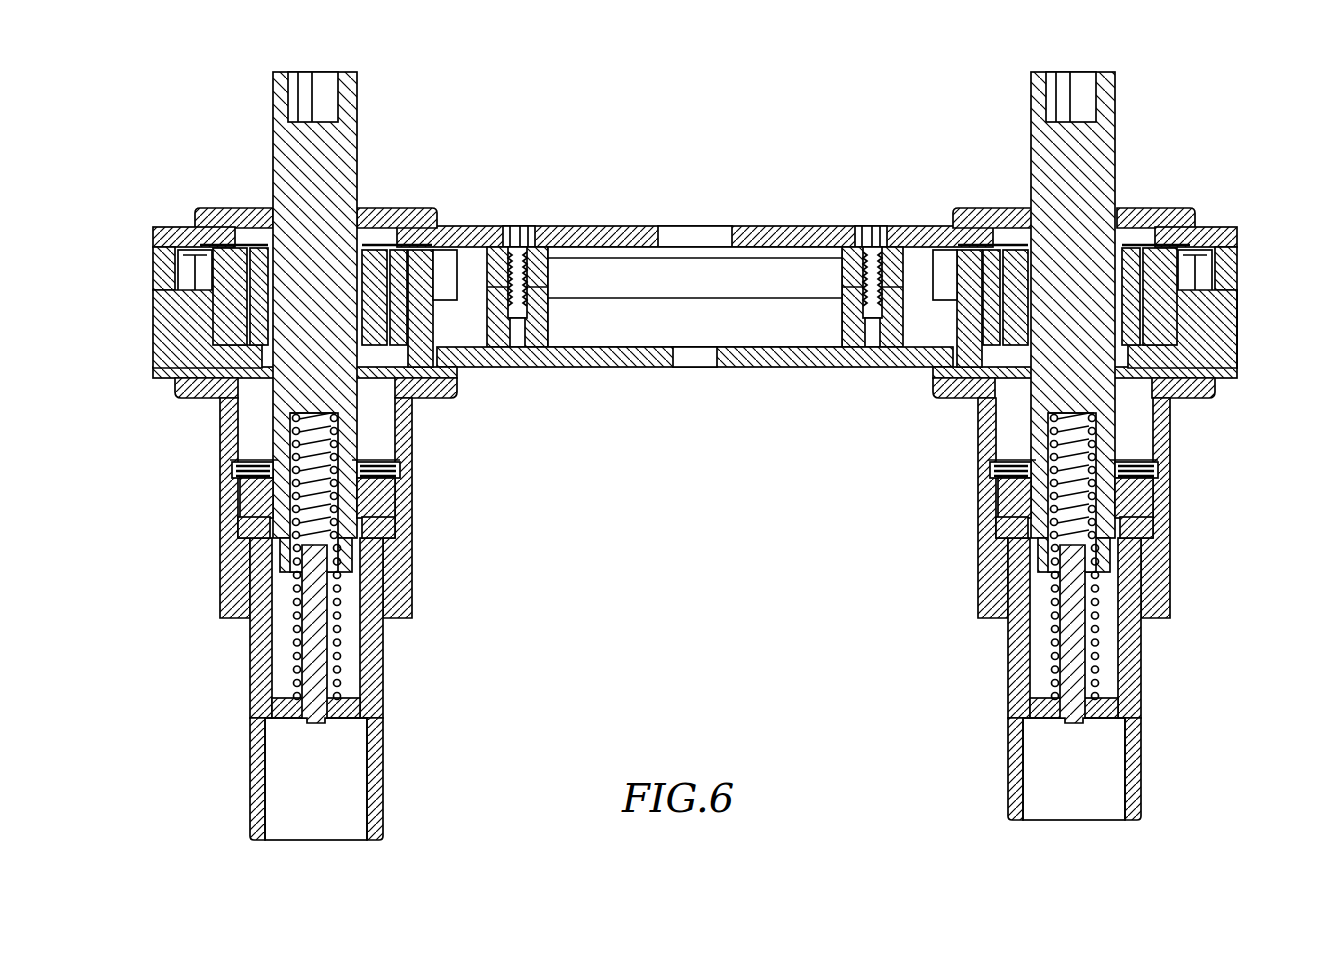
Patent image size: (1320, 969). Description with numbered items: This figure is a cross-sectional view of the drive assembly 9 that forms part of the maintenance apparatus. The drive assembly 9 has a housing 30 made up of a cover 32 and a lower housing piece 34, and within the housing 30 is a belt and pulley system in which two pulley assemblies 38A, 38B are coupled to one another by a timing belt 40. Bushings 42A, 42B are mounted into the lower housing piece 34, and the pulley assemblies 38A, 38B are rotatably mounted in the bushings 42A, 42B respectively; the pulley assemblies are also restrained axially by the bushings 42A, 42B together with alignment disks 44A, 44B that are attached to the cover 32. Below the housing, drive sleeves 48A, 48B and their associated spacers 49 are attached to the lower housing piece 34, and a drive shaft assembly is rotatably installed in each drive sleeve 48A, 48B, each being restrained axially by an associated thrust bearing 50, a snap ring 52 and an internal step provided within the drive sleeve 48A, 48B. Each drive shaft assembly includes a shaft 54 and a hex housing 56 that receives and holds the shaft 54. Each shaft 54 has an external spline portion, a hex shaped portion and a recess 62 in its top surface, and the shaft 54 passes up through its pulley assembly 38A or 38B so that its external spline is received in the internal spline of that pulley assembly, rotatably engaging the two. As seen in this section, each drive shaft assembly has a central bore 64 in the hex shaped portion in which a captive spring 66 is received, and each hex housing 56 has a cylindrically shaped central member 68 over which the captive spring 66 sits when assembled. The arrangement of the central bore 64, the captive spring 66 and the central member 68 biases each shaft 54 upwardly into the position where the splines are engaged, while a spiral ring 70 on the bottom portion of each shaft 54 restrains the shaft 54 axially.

The drive assembly 9 is at (526, 190).
The housing 30 is at (1247, 233).
The cover 32 is at (1210, 230).
The lower housing piece 34 is at (1237, 353).
The pulley assembly 38A is at (225, 245).
The pulley assembly 38B is at (1143, 250).
The timing belt 40 is at (198, 262).
The bushing 42A is at (205, 330).
The bushing 42B is at (1195, 332).
The alignment disk 44A is at (248, 208).
The alignment disk 44B is at (1000, 218).
The drive sleeve 48A is at (405, 592).
The drive sleeve 48B is at (1170, 552).
The spacer 49 is at (456, 376).
The thrust bearing 50 is at (232, 472).
The snap ring 52 is at (395, 455).
The shaft 54 is at (348, 147).
The hex housing 56 is at (383, 764).
The recess 62 is at (300, 80).
The central bore 64 is at (312, 488).
The captive spring 66 is at (305, 520).
The central member 68 is at (330, 658).
The spiral ring 70 is at (350, 556).